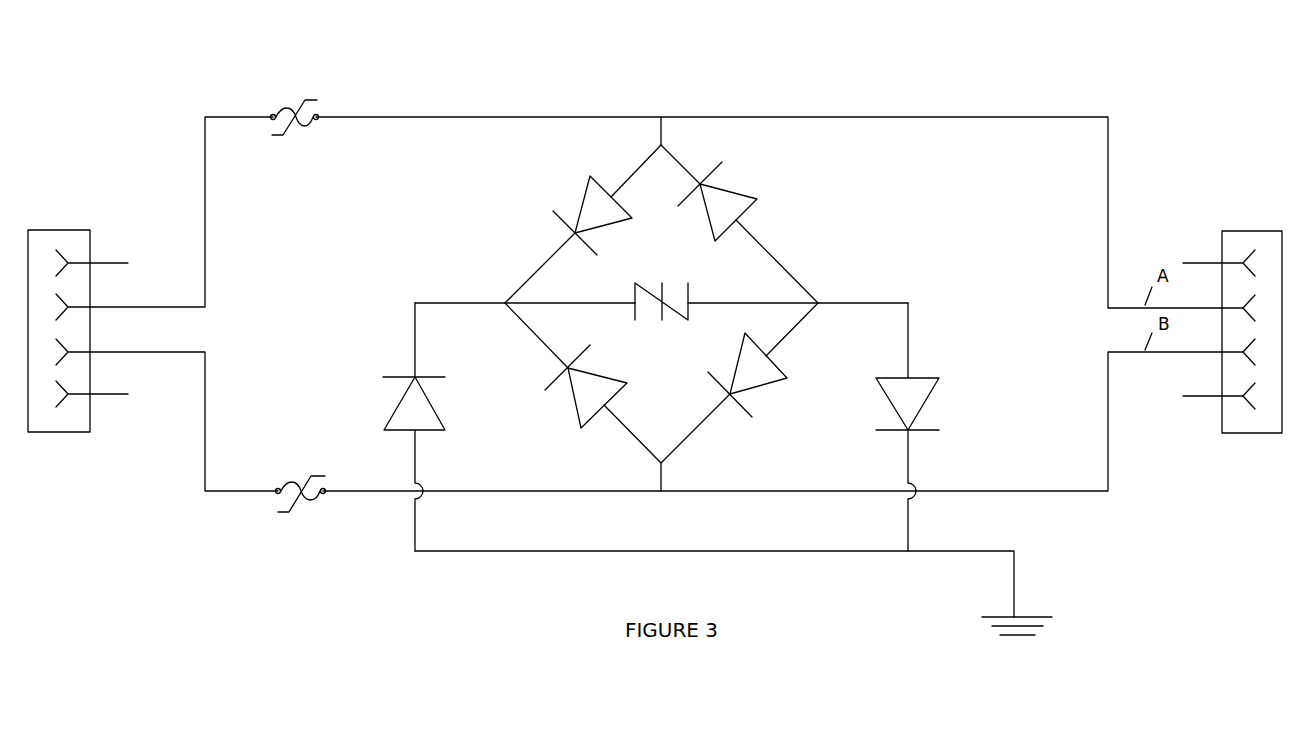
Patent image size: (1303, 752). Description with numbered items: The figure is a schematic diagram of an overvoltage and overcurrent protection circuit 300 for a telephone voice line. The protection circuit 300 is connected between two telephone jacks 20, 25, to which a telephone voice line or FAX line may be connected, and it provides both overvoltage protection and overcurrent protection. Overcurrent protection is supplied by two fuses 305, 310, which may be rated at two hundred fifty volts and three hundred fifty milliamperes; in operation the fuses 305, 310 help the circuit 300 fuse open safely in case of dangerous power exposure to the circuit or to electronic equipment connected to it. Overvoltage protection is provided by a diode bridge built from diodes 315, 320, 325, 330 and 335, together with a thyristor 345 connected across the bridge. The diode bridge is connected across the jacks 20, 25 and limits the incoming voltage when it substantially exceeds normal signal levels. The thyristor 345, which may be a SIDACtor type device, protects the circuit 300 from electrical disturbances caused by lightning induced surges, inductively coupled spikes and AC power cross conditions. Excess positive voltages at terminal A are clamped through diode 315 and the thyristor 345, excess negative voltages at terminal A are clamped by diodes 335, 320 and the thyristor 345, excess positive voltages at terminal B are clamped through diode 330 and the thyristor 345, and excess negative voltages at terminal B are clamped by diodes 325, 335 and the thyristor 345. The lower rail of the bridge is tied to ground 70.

The RJ-11 jack 20 is at (78, 332).
The RJ-11 jack 25 is at (1232, 333).
The ground 70 is at (1016, 641).
The overvoltage and overcurrent protection circuit 300 is at (1114, 145).
The fuse 305 is at (293, 102).
The fuse 310 is at (300, 478).
The diode 315 is at (583, 224).
The diode 320 is at (739, 224).
The diode 325 is at (800, 427).
The diode 330 is at (583, 383).
The diode 335 is at (414, 427).
The thyristor 345 is at (652, 283).